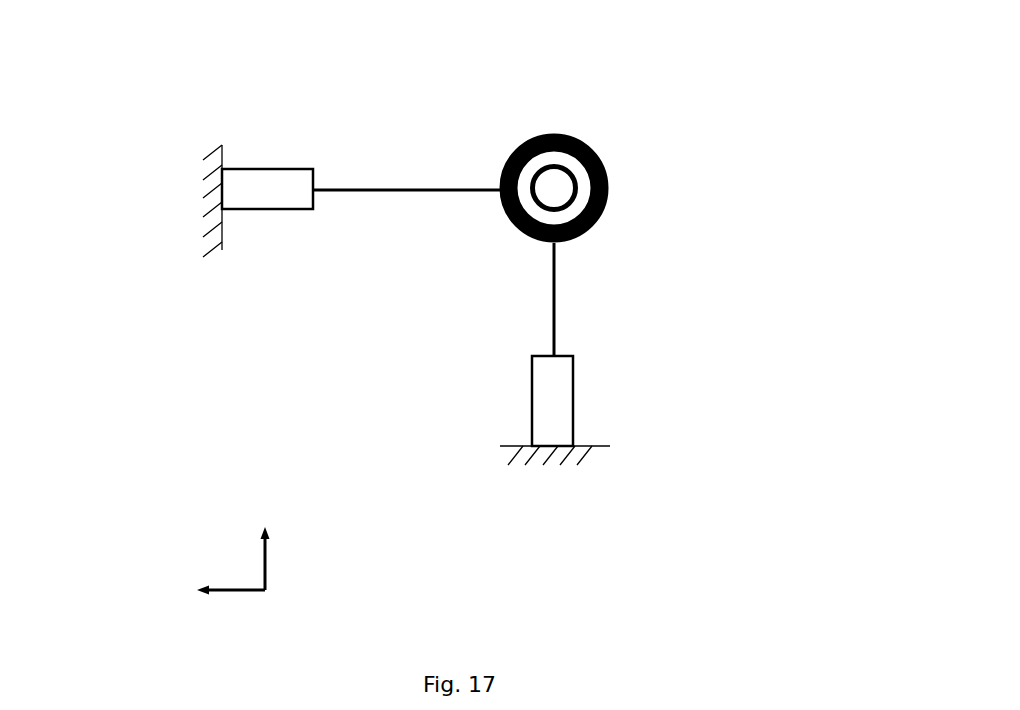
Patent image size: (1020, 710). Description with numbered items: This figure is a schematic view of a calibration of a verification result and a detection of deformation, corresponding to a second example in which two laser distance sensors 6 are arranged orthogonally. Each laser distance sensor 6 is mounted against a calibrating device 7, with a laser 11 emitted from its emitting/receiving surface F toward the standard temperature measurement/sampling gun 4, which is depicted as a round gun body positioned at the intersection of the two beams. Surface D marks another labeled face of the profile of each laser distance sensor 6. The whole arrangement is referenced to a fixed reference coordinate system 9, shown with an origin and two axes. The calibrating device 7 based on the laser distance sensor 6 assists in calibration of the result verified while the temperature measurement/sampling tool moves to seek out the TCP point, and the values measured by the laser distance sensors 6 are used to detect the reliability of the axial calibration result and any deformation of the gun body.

The standard temperature measurement/sampling gun 4 is at (567, 137).
The laser distance sensor 6 is at (273, 187).
The calibrating device 7 is at (220, 230).
The fixed reference coordinate system 9 is at (272, 585).
The laser 11 is at (440, 185).
The surface F is at (317, 178).
The surface D is at (248, 193).